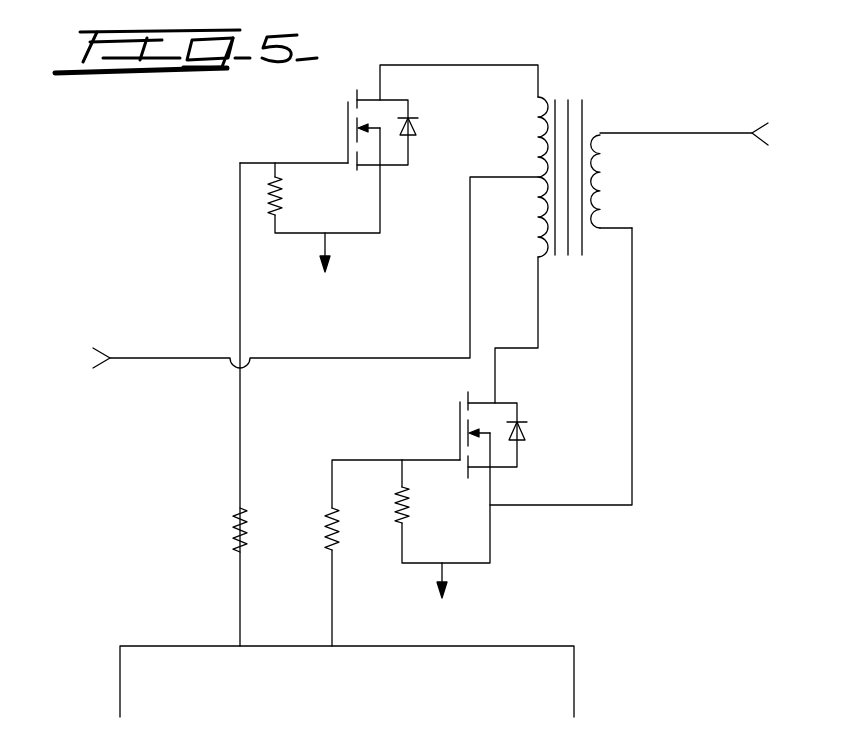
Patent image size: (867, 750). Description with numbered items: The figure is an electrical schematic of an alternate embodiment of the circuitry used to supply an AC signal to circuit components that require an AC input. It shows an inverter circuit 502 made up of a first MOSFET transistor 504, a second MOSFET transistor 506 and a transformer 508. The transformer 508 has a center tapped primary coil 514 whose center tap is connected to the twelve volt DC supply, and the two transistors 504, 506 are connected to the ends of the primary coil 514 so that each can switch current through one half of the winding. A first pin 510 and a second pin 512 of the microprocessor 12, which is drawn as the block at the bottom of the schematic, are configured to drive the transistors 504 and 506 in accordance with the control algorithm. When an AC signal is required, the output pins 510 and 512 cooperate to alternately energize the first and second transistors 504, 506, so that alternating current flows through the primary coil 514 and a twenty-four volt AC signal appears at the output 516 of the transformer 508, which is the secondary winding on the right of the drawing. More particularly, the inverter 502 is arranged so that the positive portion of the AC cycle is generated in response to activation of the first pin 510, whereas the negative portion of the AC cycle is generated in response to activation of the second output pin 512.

The microprocessor 12 is at (575, 690).
The inverter circuit 502 is at (134, 542).
The first MOSFET transistor 504 is at (346, 128).
The second MOSFET transistor 506 is at (458, 430).
The transformer 508 is at (603, 112).
The first pin 510 is at (240, 615).
The second pin 512 is at (332, 592).
The center tapped primary coil 514 is at (538, 140).
The output 516 is at (672, 133).